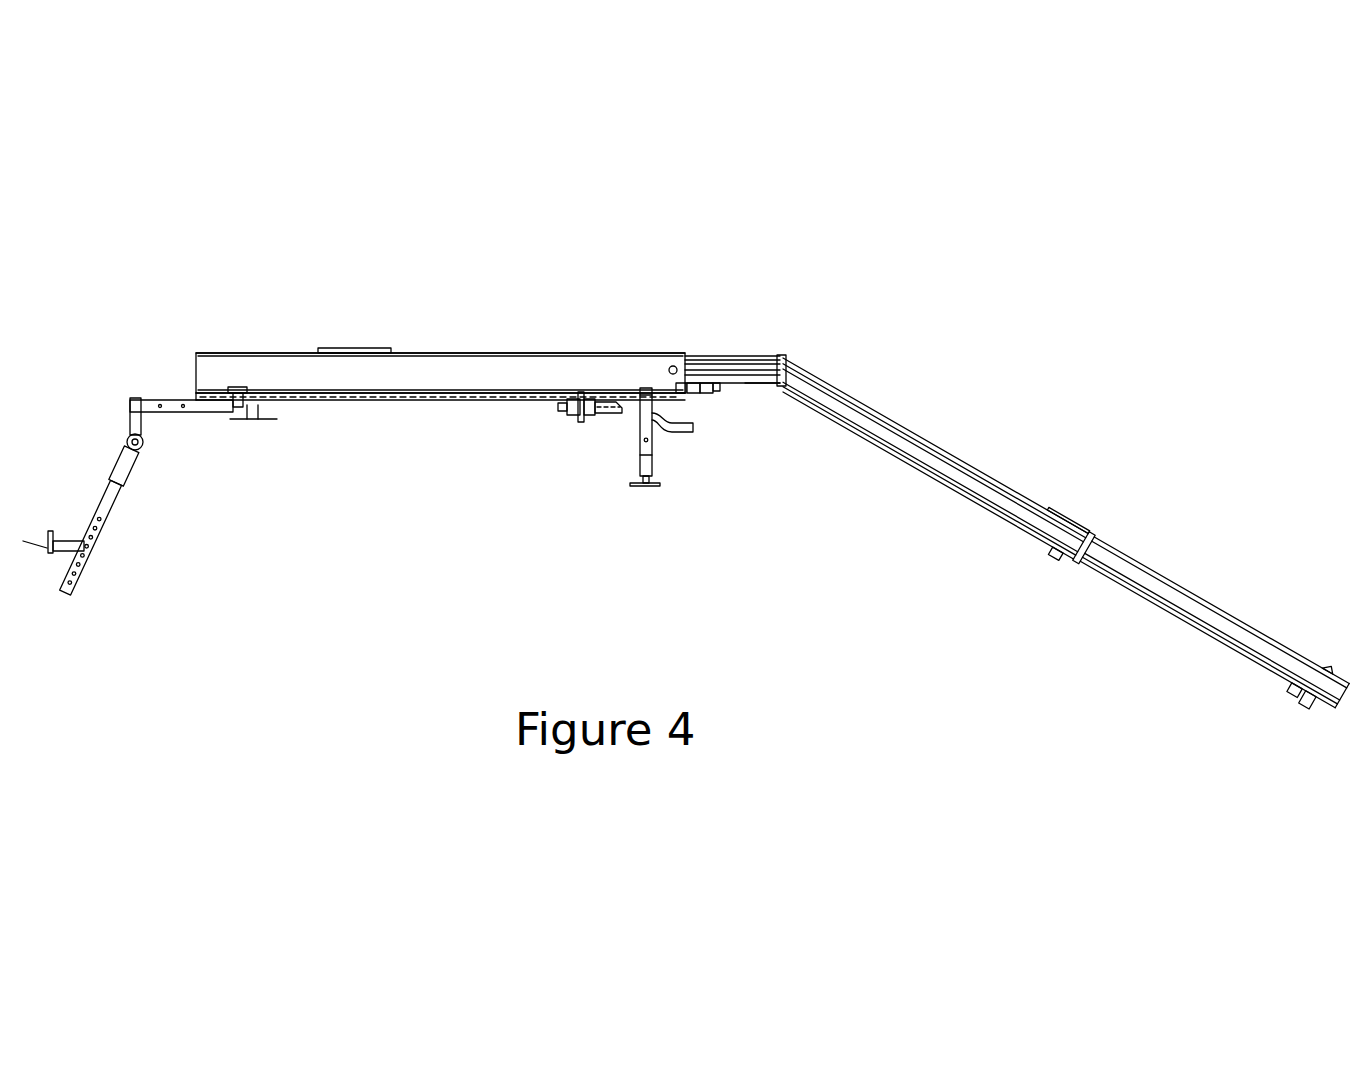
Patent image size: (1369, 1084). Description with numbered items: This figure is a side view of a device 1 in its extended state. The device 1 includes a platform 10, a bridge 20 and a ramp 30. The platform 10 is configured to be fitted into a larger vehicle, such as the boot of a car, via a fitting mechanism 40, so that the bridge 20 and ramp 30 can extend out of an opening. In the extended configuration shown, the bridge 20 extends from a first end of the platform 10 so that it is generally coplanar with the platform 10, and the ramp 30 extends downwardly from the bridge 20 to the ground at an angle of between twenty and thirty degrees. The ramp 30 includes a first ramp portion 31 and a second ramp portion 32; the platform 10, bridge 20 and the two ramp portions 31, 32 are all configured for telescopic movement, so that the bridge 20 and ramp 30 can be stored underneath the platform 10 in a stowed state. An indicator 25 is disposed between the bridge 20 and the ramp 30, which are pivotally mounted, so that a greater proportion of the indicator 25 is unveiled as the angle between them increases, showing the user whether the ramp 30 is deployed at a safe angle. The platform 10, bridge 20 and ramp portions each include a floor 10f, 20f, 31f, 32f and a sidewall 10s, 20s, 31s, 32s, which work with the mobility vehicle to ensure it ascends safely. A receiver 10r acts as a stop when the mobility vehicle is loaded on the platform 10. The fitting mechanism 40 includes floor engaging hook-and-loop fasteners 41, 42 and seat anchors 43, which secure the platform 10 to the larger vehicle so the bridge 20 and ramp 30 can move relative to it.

The device 1 is at (955, 277).
The platform 10 is at (549, 277).
The receiver 10r is at (355, 350).
The sidewall 10s is at (462, 352).
The floor 10f is at (557, 378).
The bridge 20 is at (760, 314).
The sidewall 20s is at (733, 355).
The floor 20f is at (753, 380).
The indicator 25 is at (780, 357).
The ramp 30 is at (1161, 406).
The first ramp portion 31 is at (1001, 419).
The sidewall 31s is at (993, 482).
The floor 31f is at (952, 490).
The second ramp portion 32 is at (1238, 540).
The sidewall 32s is at (1228, 620).
The floor 32f is at (1205, 628).
The fitting mechanism 40 is at (551, 554).
The floor engaging hook-and-loop fastener 41 is at (639, 443).
The floor engaging hook-and-loop fastener 42 is at (252, 424).
The seat anchor 43 is at (97, 540).